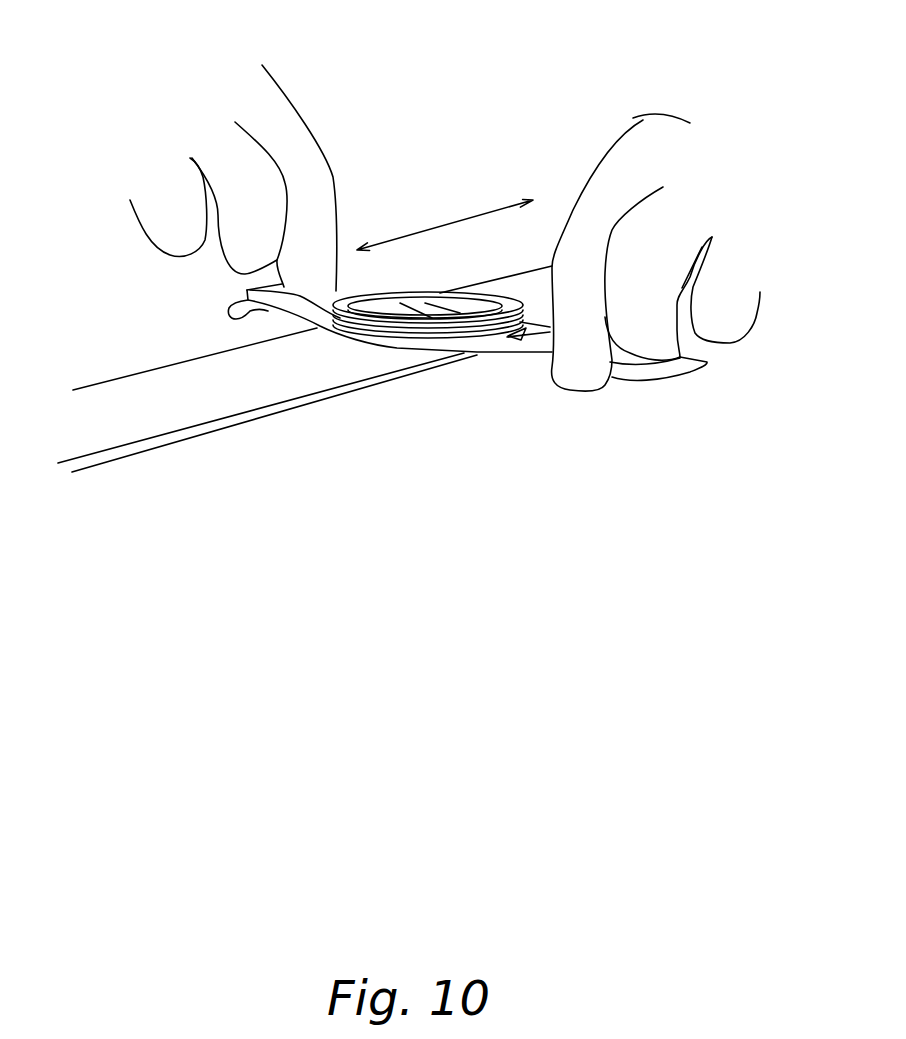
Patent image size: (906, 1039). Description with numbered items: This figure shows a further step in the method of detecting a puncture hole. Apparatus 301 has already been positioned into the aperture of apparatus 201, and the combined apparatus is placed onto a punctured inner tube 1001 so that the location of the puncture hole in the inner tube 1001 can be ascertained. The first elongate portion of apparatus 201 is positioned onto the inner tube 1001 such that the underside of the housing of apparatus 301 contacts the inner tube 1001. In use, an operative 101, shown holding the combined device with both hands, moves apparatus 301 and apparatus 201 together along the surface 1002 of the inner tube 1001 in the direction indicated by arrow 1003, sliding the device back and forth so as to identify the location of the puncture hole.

The operative 101 is at (642, 140).
The apparatus 201 is at (497, 352).
The apparatus 301 is at (395, 315).
The inner tube 1001 is at (95, 433).
The surface 1002 is at (200, 405).
The arrow 1003 is at (448, 220).